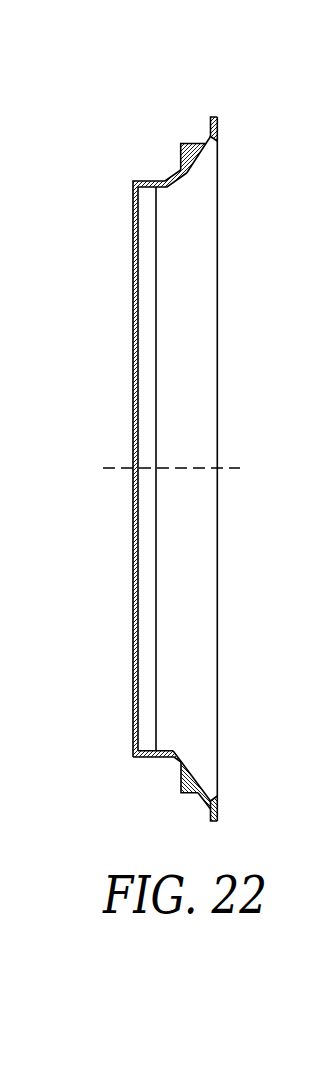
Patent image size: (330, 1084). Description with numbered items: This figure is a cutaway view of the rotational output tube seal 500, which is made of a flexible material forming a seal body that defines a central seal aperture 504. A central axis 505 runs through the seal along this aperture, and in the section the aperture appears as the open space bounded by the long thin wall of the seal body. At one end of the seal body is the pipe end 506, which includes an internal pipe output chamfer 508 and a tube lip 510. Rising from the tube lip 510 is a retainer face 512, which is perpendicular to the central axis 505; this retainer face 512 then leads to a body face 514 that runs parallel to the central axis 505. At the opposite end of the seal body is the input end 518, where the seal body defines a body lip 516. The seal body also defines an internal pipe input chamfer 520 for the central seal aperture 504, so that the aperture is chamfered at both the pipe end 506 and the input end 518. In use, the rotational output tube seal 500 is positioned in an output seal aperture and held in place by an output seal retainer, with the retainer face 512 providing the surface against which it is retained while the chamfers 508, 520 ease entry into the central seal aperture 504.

The rotational output tube seal 500 is at (178, 163).
The central seal aperture 504 is at (132, 732).
The central axis 505 is at (192, 468).
The pipe end 506 is at (137, 181).
The internal pipe output chamfer 508 is at (134, 190).
The tube lip 510 is at (138, 198).
The retainer face 512 is at (181, 772).
The body face 514 is at (192, 792).
The body lip 516 is at (211, 811).
The input end 518 is at (215, 117).
The internal pipe input chamfer 520 is at (178, 752).